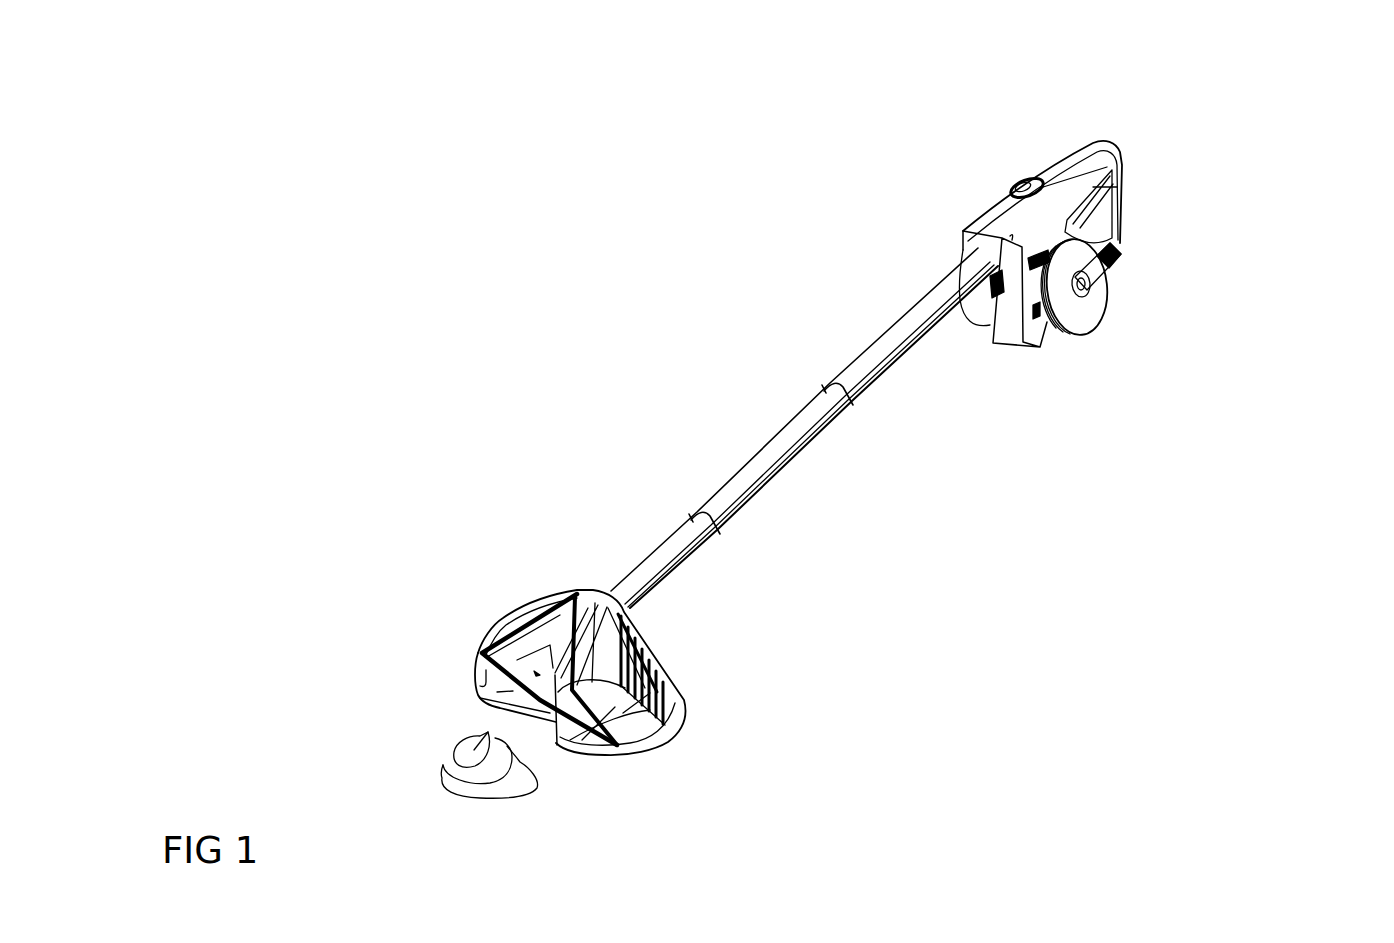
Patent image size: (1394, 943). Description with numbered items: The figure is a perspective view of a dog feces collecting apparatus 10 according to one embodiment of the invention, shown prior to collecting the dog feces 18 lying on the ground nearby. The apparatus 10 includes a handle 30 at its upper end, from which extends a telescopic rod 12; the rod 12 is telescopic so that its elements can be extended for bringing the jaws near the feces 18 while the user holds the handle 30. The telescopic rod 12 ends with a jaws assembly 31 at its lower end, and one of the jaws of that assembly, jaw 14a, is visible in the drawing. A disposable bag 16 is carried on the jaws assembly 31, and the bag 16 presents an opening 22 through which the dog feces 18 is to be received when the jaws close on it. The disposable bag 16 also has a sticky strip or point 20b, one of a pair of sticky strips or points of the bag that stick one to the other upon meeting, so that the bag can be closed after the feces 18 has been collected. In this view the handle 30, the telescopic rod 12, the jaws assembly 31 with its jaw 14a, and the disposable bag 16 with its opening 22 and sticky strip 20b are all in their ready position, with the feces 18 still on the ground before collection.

The dog feces collecting apparatus 10 is at (1273, 126).
The telescopic rod 12 is at (810, 437).
The jaw 14a is at (653, 607).
The disposable bag 16 is at (593, 746).
The dog feces 18 is at (460, 767).
The sticky strip of the disposable bag 20b is at (478, 662).
The opening of the disposable bag 22 is at (673, 640).
The handle 30 is at (1089, 158).
The jaws assembly 31 is at (688, 773).